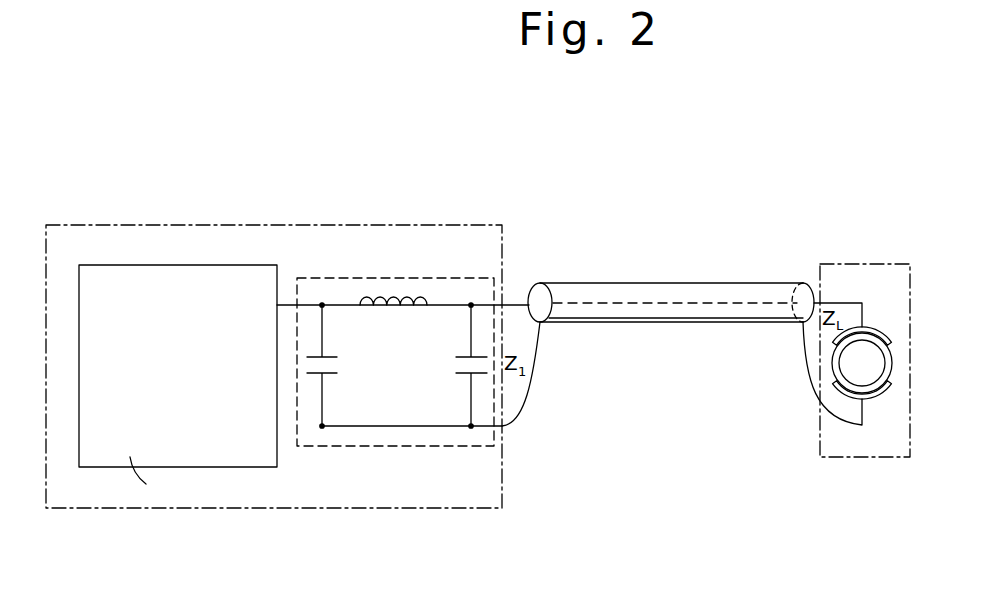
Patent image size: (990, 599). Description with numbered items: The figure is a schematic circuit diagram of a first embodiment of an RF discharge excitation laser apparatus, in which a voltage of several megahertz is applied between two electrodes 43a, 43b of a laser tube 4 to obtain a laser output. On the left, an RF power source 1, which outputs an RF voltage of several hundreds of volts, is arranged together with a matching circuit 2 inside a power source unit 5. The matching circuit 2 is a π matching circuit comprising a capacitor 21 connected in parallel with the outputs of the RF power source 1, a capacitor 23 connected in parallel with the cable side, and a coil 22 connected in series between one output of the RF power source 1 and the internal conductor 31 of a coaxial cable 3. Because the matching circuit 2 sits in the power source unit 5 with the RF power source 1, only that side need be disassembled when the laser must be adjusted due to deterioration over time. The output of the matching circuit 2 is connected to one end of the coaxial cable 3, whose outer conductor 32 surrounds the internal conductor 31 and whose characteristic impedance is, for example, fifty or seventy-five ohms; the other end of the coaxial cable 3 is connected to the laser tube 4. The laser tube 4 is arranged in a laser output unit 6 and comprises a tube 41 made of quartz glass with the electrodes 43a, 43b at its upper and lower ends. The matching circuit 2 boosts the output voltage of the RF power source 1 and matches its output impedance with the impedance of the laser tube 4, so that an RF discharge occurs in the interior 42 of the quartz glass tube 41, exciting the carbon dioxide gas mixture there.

The RF power source 1 is at (145, 265).
The matching circuit 2 is at (415, 278).
The capacitor 21 is at (328, 375).
The coil 22 is at (383, 297).
The capacitor 23 is at (462, 375).
The coaxial cable 3 is at (686, 283).
The internal conductor 31 is at (675, 306).
The outer conductor 32 is at (600, 323).
The laser tube 4 is at (900, 354).
The quartz glass tube 41 is at (893, 363).
The interior 42 is at (866, 367).
The electrode 43a is at (888, 331).
The electrode 43b is at (882, 398).
The power source unit 5 is at (242, 225).
The laser output unit 6 is at (870, 264).